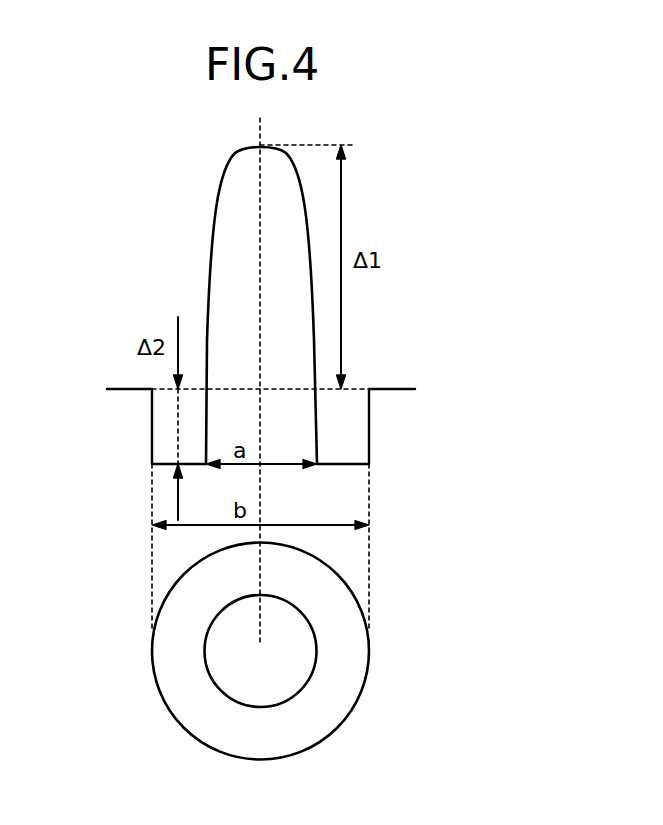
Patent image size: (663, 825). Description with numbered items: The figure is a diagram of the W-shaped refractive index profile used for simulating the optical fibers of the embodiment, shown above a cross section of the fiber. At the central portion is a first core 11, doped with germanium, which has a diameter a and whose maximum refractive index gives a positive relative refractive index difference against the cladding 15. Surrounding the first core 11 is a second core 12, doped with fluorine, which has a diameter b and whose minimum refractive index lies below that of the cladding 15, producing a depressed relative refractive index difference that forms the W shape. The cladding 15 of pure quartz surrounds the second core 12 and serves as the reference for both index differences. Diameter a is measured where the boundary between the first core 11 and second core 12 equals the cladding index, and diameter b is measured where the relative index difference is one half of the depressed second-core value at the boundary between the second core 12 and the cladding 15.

The first core 11 is at (288, 678).
The second core 12 is at (342, 688).
The cladding 15 is at (313, 651).